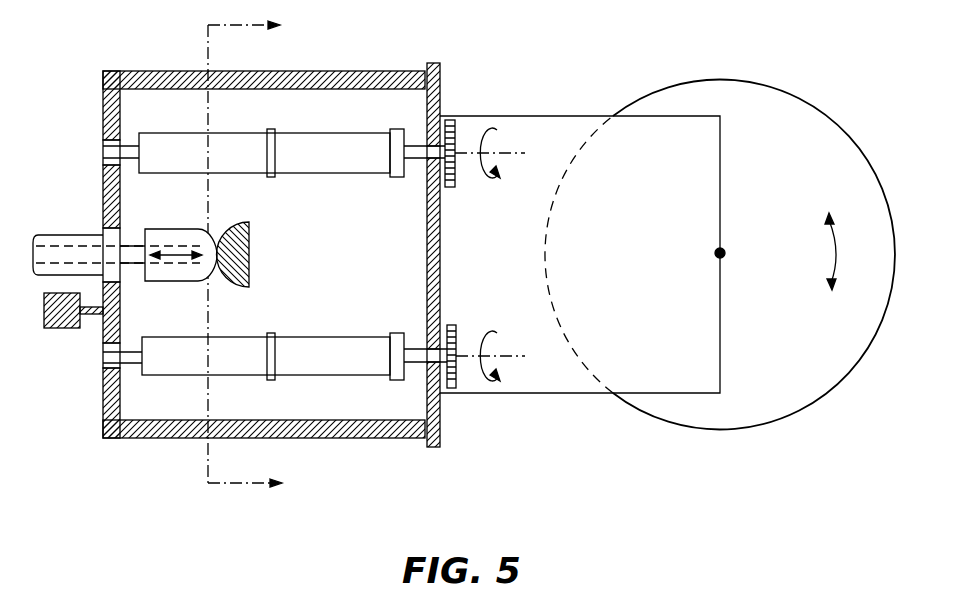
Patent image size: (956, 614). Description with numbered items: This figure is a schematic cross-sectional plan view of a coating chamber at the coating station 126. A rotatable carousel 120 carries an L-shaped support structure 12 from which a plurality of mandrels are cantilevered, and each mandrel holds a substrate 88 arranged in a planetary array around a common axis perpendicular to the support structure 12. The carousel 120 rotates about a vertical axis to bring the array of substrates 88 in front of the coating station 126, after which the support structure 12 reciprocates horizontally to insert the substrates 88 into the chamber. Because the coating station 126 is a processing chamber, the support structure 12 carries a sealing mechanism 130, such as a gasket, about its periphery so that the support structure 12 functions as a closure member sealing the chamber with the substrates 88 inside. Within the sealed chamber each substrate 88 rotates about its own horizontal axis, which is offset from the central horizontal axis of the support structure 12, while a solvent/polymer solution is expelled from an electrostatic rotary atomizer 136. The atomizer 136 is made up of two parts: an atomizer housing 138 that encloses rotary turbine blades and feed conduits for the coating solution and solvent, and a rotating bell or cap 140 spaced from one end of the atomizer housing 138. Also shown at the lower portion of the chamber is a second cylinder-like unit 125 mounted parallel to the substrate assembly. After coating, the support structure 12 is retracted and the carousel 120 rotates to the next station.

The support structure 12 is at (441, 402).
The substrate 88 is at (305, 133).
The carousel 120 is at (776, 420).
The lower cylinder actuator 125 is at (115, 363).
The coating station 126 is at (496, 56).
The sealing mechanism 130 is at (441, 428).
The electrostatic rotary atomizer 136 is at (272, 252).
The atomizer housing 138 is at (200, 229).
The rotating bell 140 is at (250, 222).